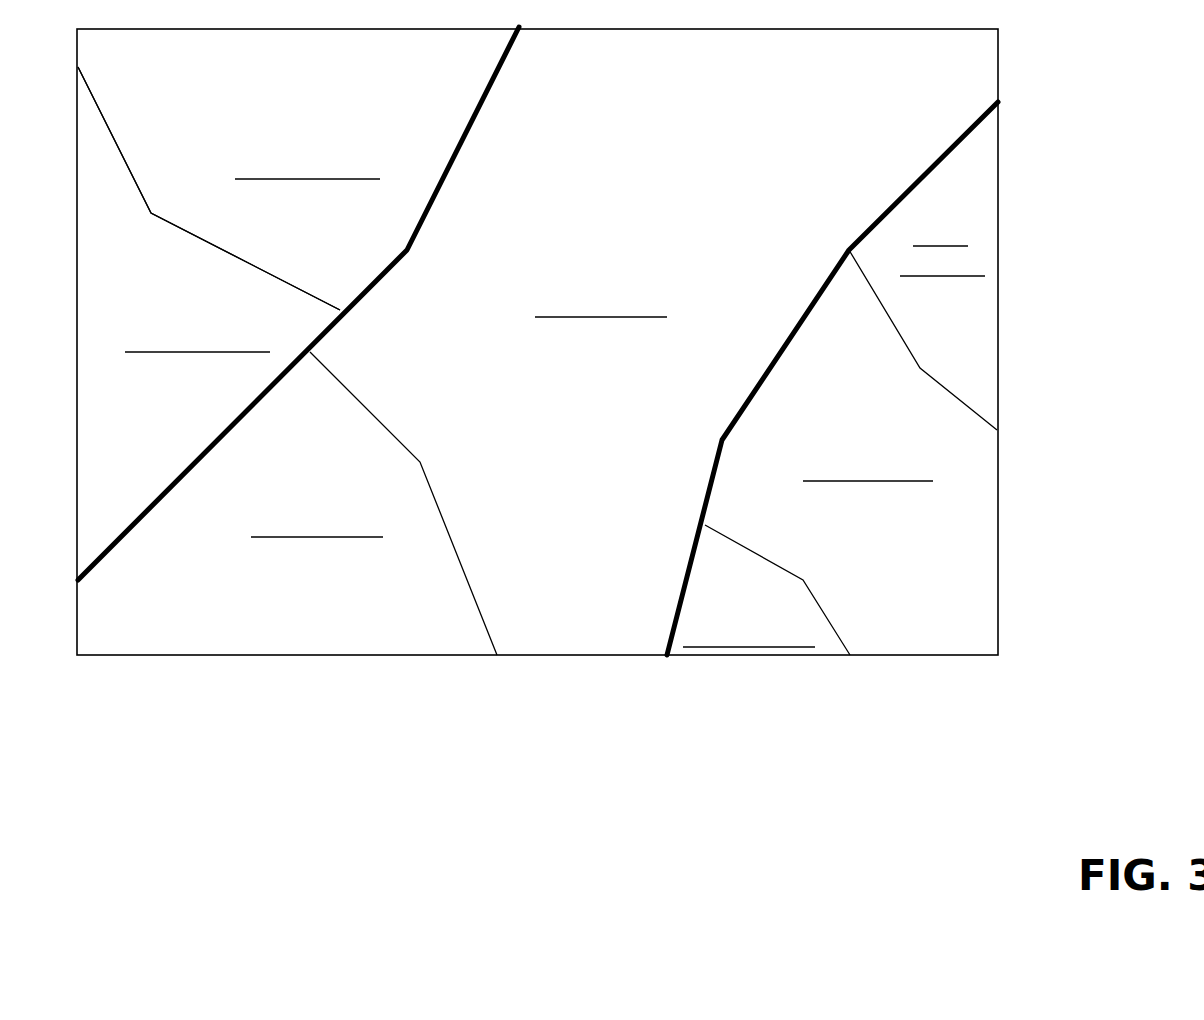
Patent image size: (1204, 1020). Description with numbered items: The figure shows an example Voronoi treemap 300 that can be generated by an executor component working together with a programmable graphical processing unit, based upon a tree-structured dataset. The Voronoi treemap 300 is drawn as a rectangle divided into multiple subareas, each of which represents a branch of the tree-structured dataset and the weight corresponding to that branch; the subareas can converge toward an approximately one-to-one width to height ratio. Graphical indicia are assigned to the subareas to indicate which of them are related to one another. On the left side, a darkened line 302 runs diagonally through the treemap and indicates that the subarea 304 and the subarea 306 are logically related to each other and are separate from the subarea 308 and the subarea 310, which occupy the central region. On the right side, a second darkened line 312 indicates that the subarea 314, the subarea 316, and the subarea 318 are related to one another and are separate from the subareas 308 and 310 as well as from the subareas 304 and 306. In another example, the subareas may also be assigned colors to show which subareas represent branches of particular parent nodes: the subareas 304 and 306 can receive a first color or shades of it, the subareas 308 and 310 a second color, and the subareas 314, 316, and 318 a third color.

The Voronoi treemap 300 is at (1078, 132).
The darkened line 302 is at (477, 117).
The subarea 304 is at (298, 89).
The subarea 306 is at (178, 444).
The subarea 308 is at (602, 444).
The subarea 310 is at (317, 611).
The darkened line 312 is at (810, 302).
The subarea 314 is at (749, 588).
The subarea 316 is at (914, 569).
The subarea 318 is at (960, 317).